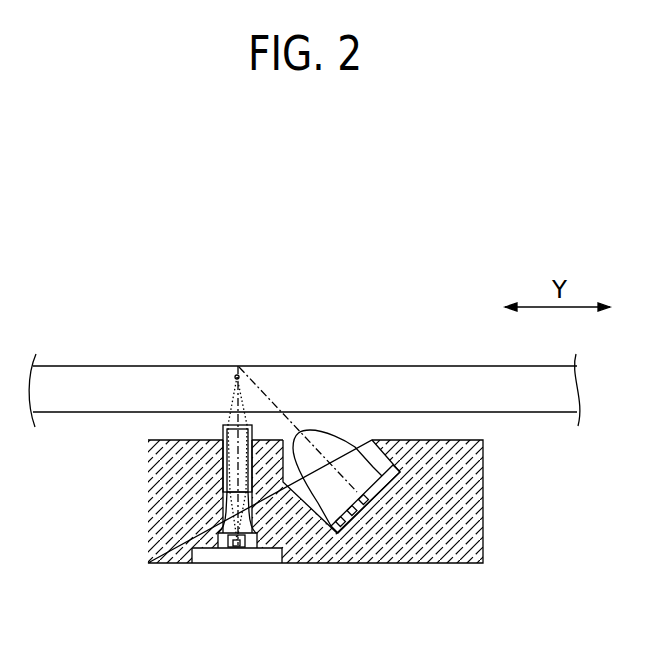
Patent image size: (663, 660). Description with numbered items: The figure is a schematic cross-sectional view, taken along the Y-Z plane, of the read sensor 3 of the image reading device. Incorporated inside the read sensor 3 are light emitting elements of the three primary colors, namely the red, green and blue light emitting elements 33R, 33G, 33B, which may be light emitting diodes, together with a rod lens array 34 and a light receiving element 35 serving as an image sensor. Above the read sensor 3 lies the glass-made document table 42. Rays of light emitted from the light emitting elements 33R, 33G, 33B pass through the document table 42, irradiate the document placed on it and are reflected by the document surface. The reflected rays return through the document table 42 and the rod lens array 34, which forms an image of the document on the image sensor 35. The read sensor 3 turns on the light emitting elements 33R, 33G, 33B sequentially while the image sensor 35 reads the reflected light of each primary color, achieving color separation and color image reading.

The document table 42 is at (448, 367).
The read sensor 3 is at (473, 493).
The rod lens array 34 is at (221, 457).
The light receiving element 35 is at (236, 548).
The red light emitting element 33R is at (343, 517).
The green light emitting element 33G is at (356, 505).
The blue light emitting element 33B is at (369, 493).